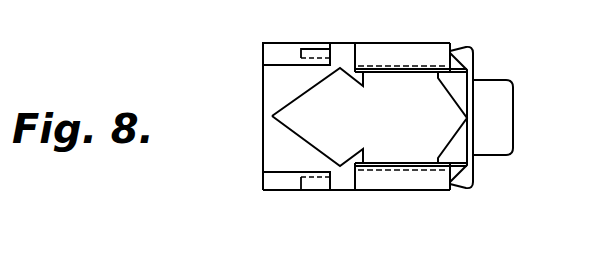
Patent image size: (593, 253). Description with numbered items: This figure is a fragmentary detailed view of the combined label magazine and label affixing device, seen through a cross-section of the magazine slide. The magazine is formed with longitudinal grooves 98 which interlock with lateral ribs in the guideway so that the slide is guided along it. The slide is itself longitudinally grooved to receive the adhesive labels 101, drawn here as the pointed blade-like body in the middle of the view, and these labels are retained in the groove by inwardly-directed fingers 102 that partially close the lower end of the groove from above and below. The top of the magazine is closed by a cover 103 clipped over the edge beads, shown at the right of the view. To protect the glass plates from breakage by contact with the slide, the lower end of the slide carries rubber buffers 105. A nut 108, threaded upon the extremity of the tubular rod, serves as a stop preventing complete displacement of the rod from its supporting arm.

The longitudinal grooves 98 is at (313, 50).
The adhesive labels 101 is at (403, 135).
The inwardly-directed fingers 102 is at (413, 53).
The cover 103 is at (474, 172).
The rubber buffers 105 is at (285, 186).
The nut 108 is at (277, 50).